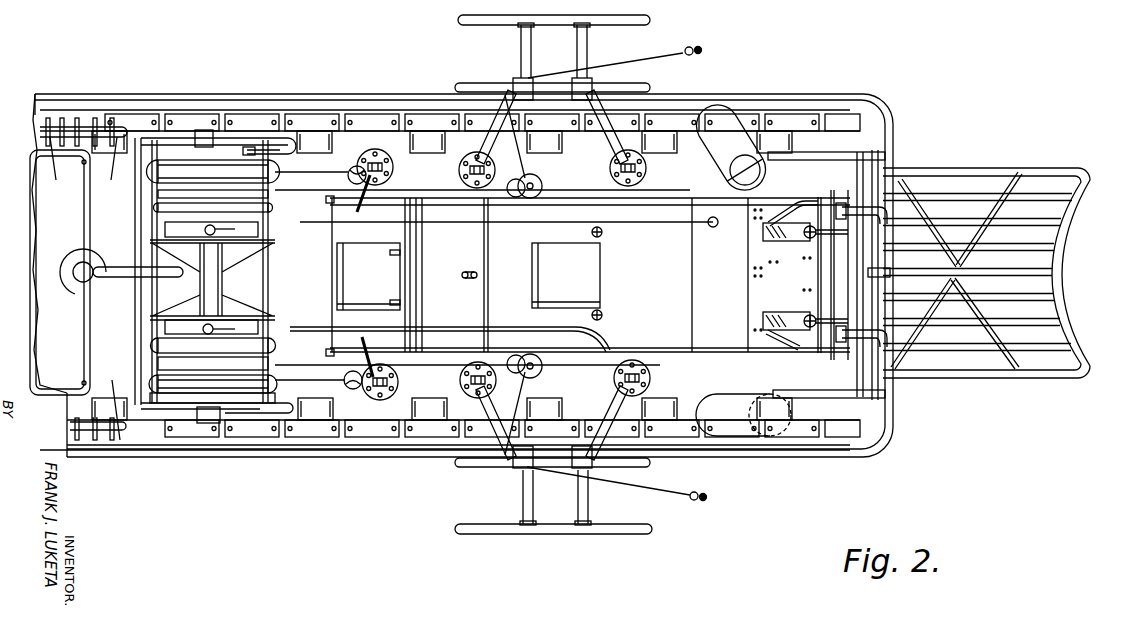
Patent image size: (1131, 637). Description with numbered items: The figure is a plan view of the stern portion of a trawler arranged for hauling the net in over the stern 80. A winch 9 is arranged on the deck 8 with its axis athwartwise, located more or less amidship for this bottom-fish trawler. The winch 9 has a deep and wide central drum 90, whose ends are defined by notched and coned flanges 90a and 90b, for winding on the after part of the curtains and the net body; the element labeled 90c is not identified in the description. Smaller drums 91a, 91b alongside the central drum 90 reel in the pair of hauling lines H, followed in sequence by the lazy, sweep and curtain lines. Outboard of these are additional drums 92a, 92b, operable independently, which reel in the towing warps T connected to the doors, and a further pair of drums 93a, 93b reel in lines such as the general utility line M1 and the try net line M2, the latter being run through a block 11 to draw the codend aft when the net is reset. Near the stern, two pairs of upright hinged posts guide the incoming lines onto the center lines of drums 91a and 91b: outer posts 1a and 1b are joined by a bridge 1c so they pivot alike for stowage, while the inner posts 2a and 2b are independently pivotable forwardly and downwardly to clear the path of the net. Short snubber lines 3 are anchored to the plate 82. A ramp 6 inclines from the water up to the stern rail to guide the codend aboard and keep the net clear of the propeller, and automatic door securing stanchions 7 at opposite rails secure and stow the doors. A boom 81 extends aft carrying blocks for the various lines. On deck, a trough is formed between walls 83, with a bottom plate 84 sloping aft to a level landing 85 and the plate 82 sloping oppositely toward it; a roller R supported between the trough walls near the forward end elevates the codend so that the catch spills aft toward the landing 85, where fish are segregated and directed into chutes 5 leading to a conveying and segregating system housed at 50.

The outer post 1a is at (850, 197).
The outer post 1b is at (842, 342).
The bridge 1c is at (893, 261).
The inner post 2a is at (807, 230).
The inner post 2b is at (808, 332).
The snubber lines 3 is at (790, 200).
The chutes 5 is at (748, 158).
The ramp 6 is at (1007, 162).
The automatic door securing stanchions 7 is at (624, 73).
The deck 8 is at (687, 184).
The winch 9 is at (145, 303).
The block 11 is at (870, 276).
The housing 50 is at (302, 118).
The stern 80 is at (883, 413).
The boom 81 is at (80, 258).
The plate 82 is at (810, 281).
The walls 83 is at (668, 347).
The bottom plate 84 is at (520, 282).
The landing 85 is at (732, 307).
The central drum 90 is at (240, 278).
The notched and coned flange 90a is at (253, 250).
The notched and coned flange 90b is at (255, 304).
The yoke plate 90c is at (205, 240).
The winch drum 91a is at (173, 228).
The winch drum 91b is at (168, 334).
The additional drum 92a is at (167, 196).
The additional drum 92b is at (162, 368).
The drum 93a is at (145, 168).
The drum 93b is at (173, 387).
The general utility line M1 is at (330, 172).
The try net line M2 is at (333, 380).
The towing warps T is at (648, 53).
The roller R is at (417, 238).
The hauling lines H is at (500, 228).